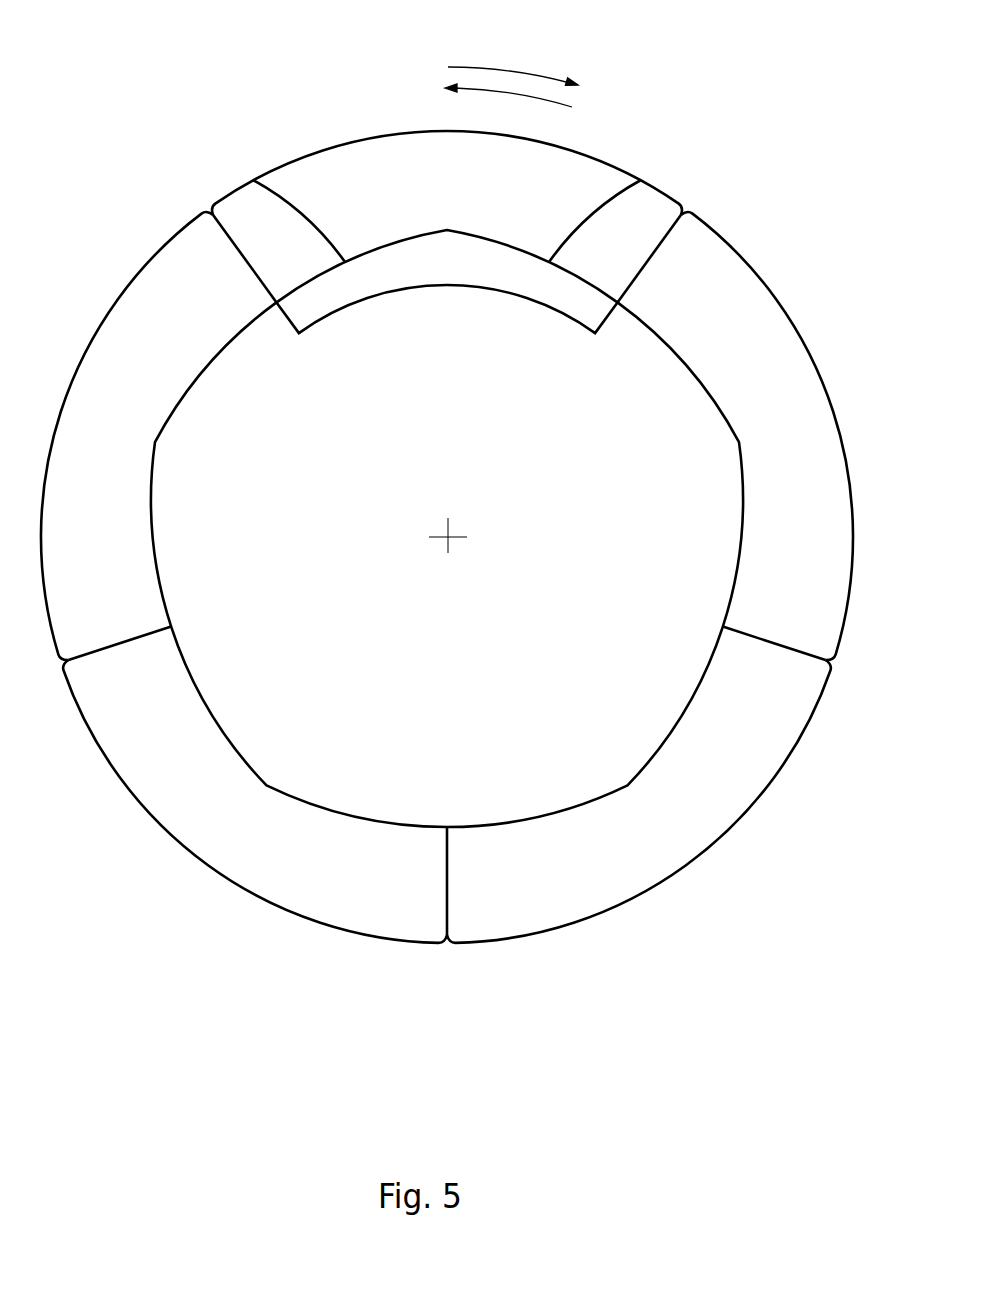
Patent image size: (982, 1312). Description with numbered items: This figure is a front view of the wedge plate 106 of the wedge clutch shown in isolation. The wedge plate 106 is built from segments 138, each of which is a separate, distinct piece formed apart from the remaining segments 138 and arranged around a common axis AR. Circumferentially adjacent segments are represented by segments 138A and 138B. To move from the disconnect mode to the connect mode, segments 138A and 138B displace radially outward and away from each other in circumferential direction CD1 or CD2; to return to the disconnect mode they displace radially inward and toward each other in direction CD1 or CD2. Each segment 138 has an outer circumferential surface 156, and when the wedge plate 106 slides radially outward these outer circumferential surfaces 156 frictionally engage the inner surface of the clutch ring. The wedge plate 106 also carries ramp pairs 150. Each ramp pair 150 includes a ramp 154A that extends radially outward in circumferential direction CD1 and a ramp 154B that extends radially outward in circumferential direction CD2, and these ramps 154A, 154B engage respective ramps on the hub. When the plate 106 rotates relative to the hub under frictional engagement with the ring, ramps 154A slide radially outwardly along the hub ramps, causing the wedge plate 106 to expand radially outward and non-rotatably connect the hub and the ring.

The wedge plate 106 is at (725, 78).
The segments 138 is at (310, 153).
The segment 138A is at (808, 432).
The segment 138B is at (675, 838).
The outer circumferential surface 156 is at (100, 323).
The ramp 154A is at (255, 181).
The ramp 154B is at (639, 181).
The ramp pair 150 is at (445, 288).
The axis of rotation AR is at (449, 542).
The circumferential direction CD1 is at (505, 70).
The circumferential direction CD2 is at (552, 100).